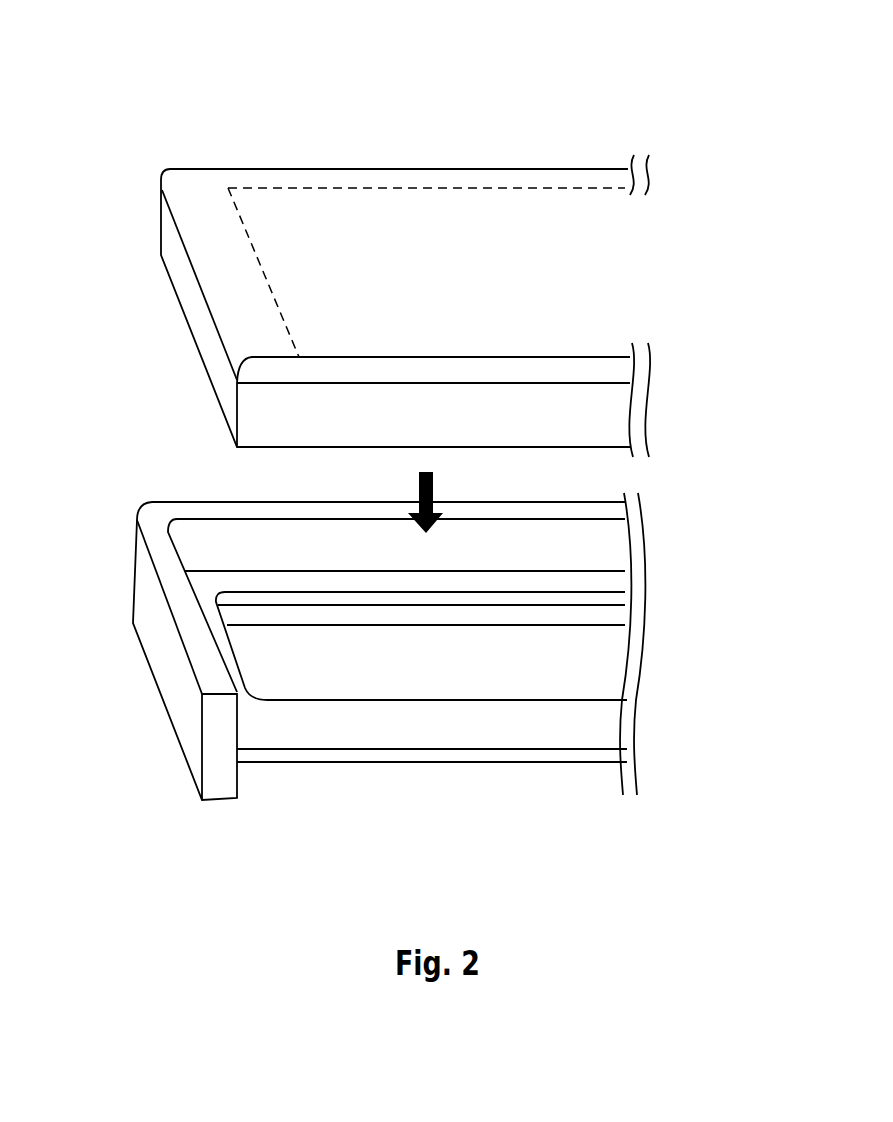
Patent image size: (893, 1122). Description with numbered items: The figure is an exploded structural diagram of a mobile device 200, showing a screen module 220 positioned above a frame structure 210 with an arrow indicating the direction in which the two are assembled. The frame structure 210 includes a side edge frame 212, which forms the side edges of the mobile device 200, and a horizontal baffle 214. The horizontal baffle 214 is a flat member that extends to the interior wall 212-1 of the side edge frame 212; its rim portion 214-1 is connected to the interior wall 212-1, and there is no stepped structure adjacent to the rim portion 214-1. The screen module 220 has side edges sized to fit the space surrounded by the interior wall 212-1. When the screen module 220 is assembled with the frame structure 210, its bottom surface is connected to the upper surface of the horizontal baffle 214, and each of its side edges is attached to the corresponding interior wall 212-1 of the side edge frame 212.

The mobile device 200 is at (343, 105).
The screen module 220 is at (528, 169).
The frame structure 210 is at (413, 700).
The side edge frame 212 is at (413, 646).
The interior wall 212-1 is at (593, 552).
The horizontal baffle 214 is at (480, 721).
The rim portion 214-1 is at (582, 572).